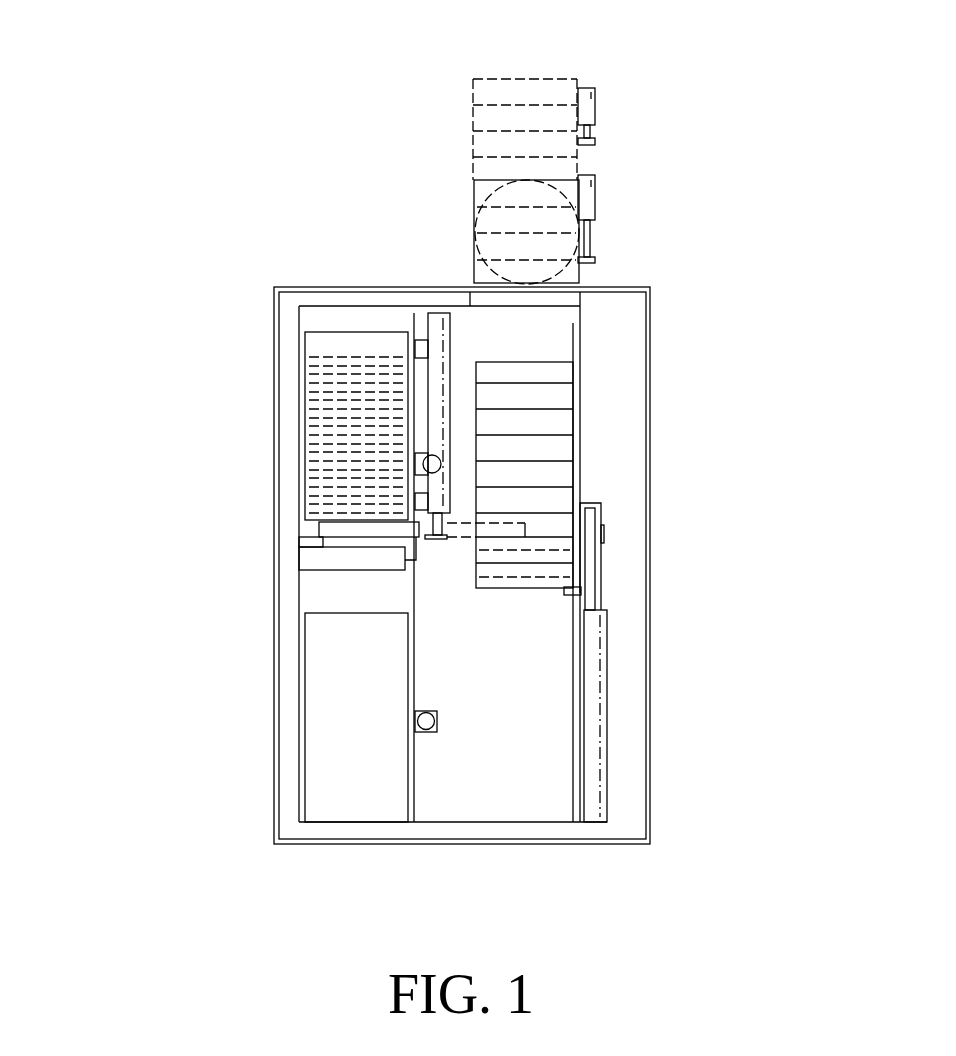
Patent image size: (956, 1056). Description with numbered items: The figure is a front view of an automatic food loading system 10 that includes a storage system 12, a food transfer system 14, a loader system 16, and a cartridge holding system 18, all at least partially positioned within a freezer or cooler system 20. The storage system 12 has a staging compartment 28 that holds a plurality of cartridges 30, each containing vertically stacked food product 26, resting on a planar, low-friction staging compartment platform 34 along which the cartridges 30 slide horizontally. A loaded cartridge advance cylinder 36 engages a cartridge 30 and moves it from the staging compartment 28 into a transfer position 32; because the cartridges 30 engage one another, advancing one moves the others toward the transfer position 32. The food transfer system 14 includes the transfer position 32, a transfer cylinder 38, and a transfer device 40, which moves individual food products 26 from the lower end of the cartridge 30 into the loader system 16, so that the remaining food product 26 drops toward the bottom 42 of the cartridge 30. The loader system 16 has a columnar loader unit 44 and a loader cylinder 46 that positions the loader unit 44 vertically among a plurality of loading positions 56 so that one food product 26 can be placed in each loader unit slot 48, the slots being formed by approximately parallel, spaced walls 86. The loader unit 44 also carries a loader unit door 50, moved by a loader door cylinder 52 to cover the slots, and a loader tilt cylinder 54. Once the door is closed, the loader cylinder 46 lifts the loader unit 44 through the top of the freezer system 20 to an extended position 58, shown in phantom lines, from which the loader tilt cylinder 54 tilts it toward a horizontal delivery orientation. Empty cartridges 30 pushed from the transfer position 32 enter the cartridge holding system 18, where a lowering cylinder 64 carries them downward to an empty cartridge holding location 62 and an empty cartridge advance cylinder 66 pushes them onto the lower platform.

The food loading system 10 is at (165, 100).
The storage system 12 is at (355, 308).
The food transfer system 14 is at (618, 480).
The loader system 16 is at (443, 235).
The cartridge holding system 18 is at (535, 737).
The freezer or cooler system 20 is at (265, 288).
The food product 26 is at (313, 416).
The staging compartment 28 is at (315, 305).
The cartridge 30 is at (305, 343).
The transfer position 32 is at (377, 318).
The staging compartment platform 34 is at (303, 530).
The loaded cartridge advance cylinder 36 is at (442, 464).
The transfer cylinder 38 is at (328, 563).
The transfer device 40 is at (378, 542).
The bottom 42 is at (303, 562).
The columnar loader unit 44 is at (586, 497).
The loader cylinder 46 is at (597, 652).
The loader unit slot 48 is at (563, 399).
The loader unit door 50 is at (555, 293).
The loader door cylinder 52 is at (597, 100).
The loader tilt cylinder 54 is at (597, 200).
The loading position 56 is at (583, 450).
The extended position 58 is at (458, 103).
The empty cartridge holding location 62 is at (295, 690).
The lowering cylinder 64 is at (437, 346).
The empty cartridge advance cylinder 66 is at (418, 722).
The wall 86 is at (523, 408).